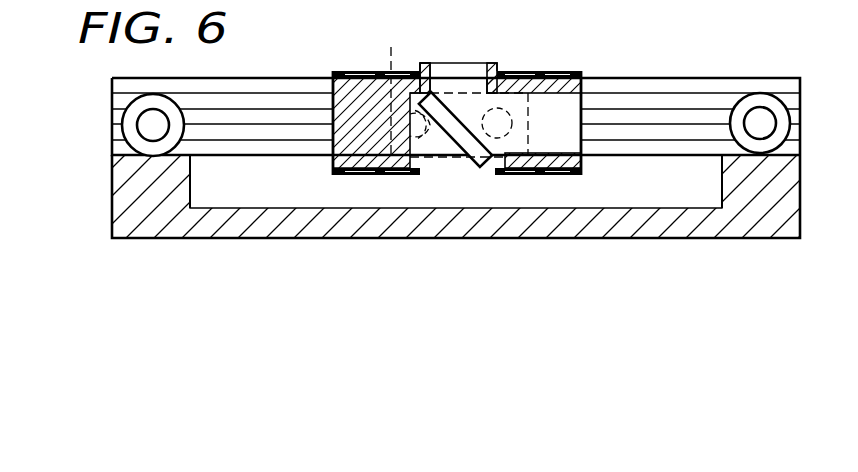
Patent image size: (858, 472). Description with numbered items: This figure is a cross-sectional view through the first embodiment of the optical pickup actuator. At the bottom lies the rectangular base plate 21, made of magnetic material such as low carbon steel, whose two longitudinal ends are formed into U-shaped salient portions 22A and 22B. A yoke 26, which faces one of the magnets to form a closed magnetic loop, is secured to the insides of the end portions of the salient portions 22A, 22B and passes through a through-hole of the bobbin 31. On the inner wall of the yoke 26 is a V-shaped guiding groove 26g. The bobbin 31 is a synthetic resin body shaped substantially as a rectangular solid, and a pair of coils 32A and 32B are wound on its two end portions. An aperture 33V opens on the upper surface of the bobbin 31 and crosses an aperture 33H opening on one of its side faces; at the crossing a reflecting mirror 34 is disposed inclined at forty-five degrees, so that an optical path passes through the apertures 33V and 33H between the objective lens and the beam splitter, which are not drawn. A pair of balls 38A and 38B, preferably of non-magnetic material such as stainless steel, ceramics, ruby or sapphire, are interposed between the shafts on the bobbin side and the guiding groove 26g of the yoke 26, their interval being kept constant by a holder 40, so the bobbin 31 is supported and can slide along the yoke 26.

The base plate 21 is at (277, 227).
The salient portion 22A is at (118, 182).
The salient portion 22B is at (783, 192).
The yoke 26 is at (645, 83).
The guiding groove 26g is at (660, 130).
The bobbin 31 is at (358, 113).
The coil 32A is at (387, 172).
The coil 32B is at (565, 173).
The aperture 33V is at (484, 74).
The aperture 33H is at (563, 147).
The reflecting mirror 34 is at (467, 162).
The ball 38A is at (405, 89).
The ball 38B is at (505, 110).
The holder 40 is at (443, 155).